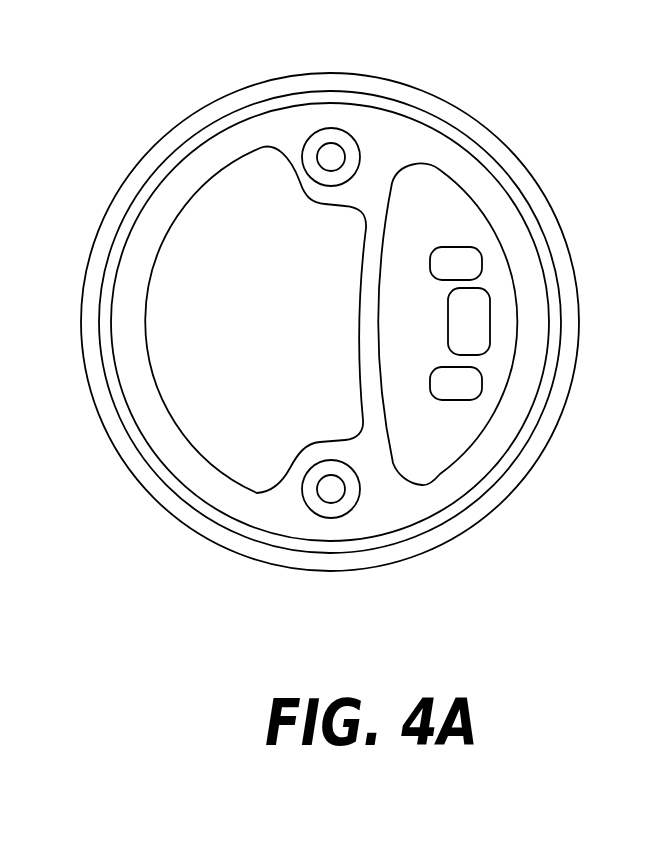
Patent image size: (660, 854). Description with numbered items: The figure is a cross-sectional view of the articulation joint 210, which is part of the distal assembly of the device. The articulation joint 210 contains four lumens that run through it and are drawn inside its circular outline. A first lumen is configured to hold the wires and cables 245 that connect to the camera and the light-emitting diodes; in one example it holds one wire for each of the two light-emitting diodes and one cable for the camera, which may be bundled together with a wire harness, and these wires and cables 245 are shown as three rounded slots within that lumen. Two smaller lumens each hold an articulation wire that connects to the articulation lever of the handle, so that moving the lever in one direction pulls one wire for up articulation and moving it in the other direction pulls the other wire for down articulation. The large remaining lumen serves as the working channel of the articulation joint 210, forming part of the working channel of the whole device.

The articulation joint 210 is at (69, 59).
The wires and cables 245 is at (484, 263).